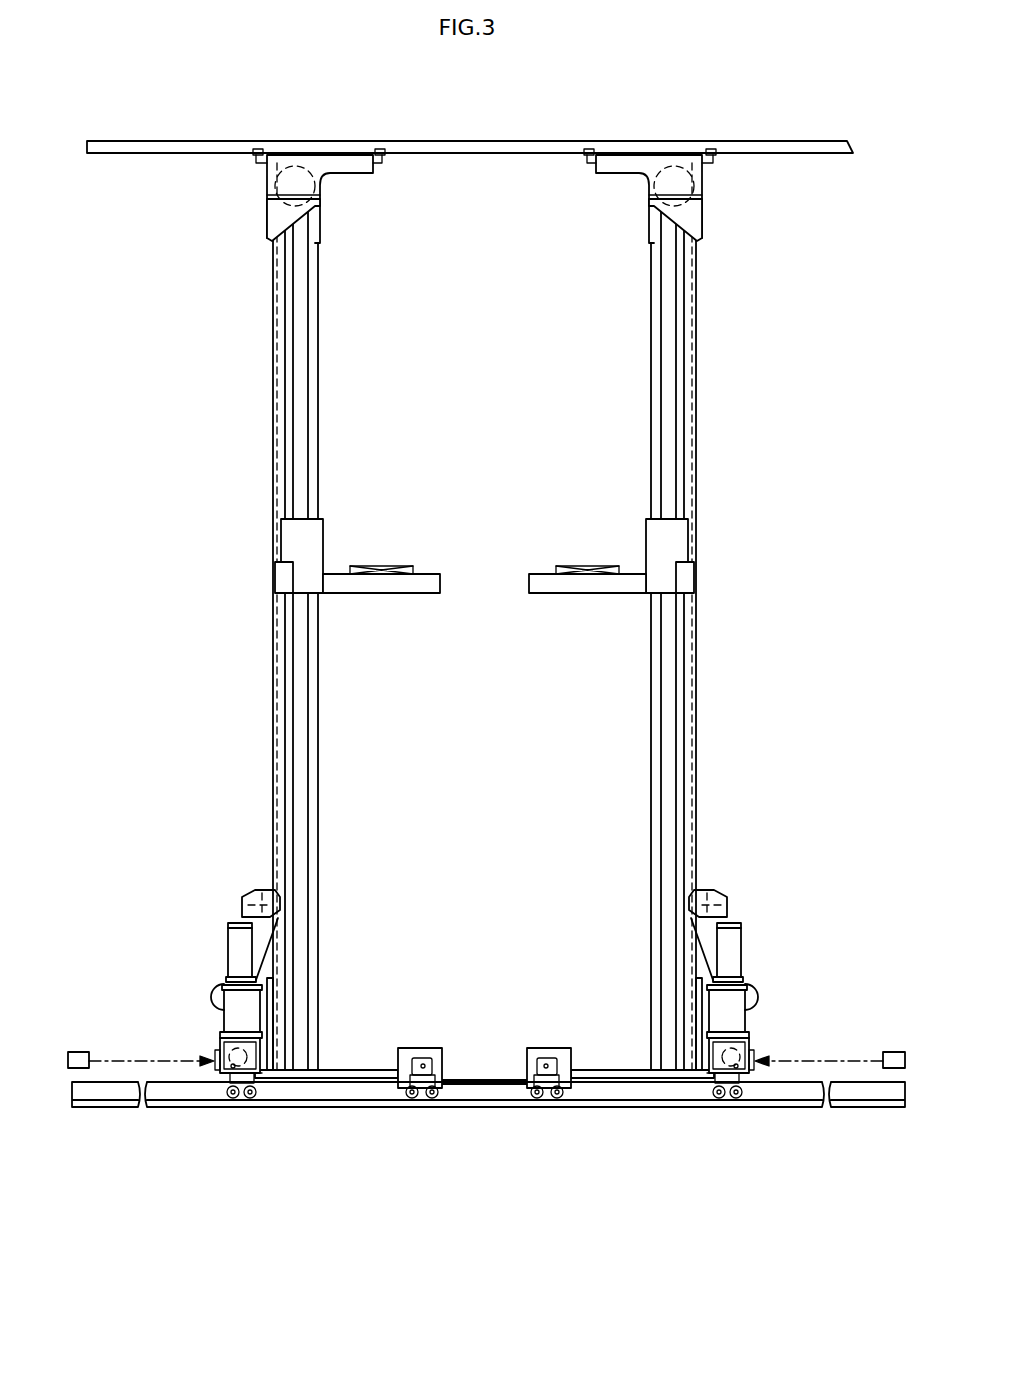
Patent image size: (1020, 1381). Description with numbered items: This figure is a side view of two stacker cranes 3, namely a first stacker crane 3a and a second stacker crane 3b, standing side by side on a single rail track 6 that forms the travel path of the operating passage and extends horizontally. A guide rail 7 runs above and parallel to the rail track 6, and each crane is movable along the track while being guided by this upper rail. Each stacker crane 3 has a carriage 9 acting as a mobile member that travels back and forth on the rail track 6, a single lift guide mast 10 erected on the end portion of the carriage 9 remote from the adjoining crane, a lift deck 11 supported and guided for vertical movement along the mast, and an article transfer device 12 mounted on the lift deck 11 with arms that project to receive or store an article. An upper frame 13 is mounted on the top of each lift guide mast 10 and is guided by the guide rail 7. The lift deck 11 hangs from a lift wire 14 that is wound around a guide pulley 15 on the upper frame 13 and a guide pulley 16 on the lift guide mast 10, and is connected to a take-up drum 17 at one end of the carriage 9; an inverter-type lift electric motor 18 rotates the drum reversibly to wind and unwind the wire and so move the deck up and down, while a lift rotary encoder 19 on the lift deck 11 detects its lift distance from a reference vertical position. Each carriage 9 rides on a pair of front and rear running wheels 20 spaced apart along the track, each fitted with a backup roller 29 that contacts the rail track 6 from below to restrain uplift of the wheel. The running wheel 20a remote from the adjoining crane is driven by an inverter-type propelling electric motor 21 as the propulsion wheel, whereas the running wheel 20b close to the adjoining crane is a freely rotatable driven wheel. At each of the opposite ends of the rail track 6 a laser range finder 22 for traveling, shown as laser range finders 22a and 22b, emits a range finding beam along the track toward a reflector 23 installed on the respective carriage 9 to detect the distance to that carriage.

The stacker crane 3 is at (488, 1153).
The stacker crane 3a is at (282, 1122).
The stacker crane 3b is at (683, 1120).
The rail track 6 is at (485, 1093).
The guide rail 7 is at (230, 140).
The carriage 9 is at (338, 1073).
The lift guide mast 10 is at (278, 708).
The lift deck 11 is at (358, 594).
The article transfer device 12 is at (380, 565).
The upper frame 13 is at (315, 165).
The lift wire 14 is at (278, 343).
The guide pulley 15 is at (275, 195).
The guide pulley 16 is at (258, 890).
The take-up drum 17 is at (222, 997).
The lift electric motor 18 is at (235, 935).
The lift rotary encoder 19 is at (278, 578).
The running wheels 20 is at (491, 1065).
The running wheel for propulsion 20a is at (215, 1085).
The driven wheel 20b is at (569, 1048).
The propelling electric motor 21 is at (240, 998).
The laser range finder for traveling 22 is at (488, 969).
The laser range finder for traveling 22a is at (85, 1050).
The laser range finder for traveling 22b is at (893, 1050).
The reflector 23 is at (220, 1052).
The backup roller 29 is at (235, 1099).